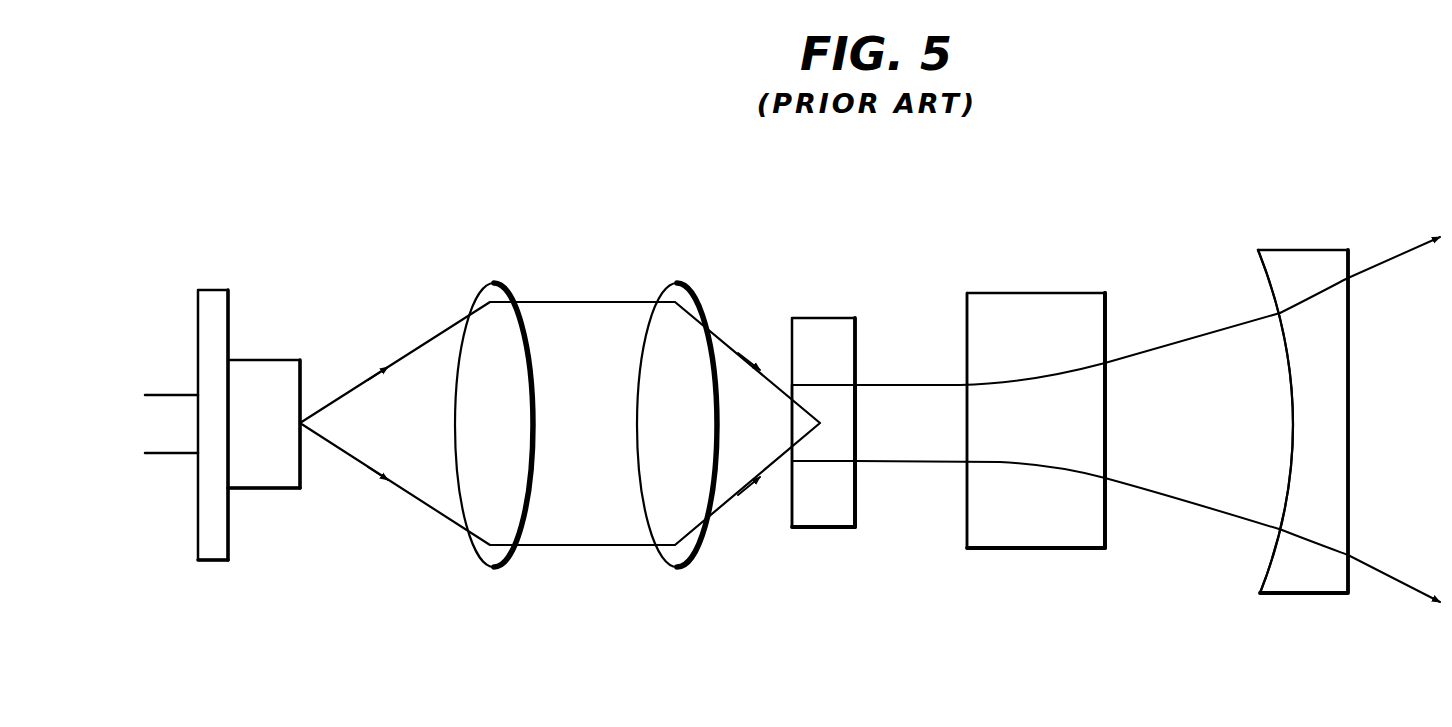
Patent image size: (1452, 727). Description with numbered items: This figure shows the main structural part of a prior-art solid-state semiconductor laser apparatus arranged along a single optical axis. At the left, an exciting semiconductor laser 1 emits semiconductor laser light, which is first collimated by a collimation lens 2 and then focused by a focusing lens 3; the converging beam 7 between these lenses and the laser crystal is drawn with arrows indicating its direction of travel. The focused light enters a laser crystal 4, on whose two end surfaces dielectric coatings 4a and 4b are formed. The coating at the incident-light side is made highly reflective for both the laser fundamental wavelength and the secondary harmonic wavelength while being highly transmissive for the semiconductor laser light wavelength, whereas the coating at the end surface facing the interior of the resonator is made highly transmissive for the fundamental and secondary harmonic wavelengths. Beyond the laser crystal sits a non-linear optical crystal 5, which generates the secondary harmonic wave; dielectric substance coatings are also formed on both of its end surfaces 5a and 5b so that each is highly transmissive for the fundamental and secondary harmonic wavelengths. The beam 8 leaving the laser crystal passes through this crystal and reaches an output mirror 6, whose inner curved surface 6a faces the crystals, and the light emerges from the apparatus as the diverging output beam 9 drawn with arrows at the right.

The exciting semiconductor laser 1 is at (258, 360).
The collimation lens 2 is at (493, 283).
The focusing lens 3 is at (675, 283).
The laser crystal 4 is at (822, 318).
The dielectric coating 4a is at (790, 500).
The dielectric coating 4b is at (857, 500).
The non-linear optical crystal 5 is at (1038, 293).
The incident surface of element 5 5a is at (965, 530).
The exit surface of element 5 5b is at (1110, 535).
The output mirror 6 is at (1296, 250).
The concave surface of lens 6 6a is at (1265, 570).
The converging light beam 7 is at (428, 340).
The diverging light beam 8 is at (1183, 345).
The output light beam 9 is at (1388, 258).